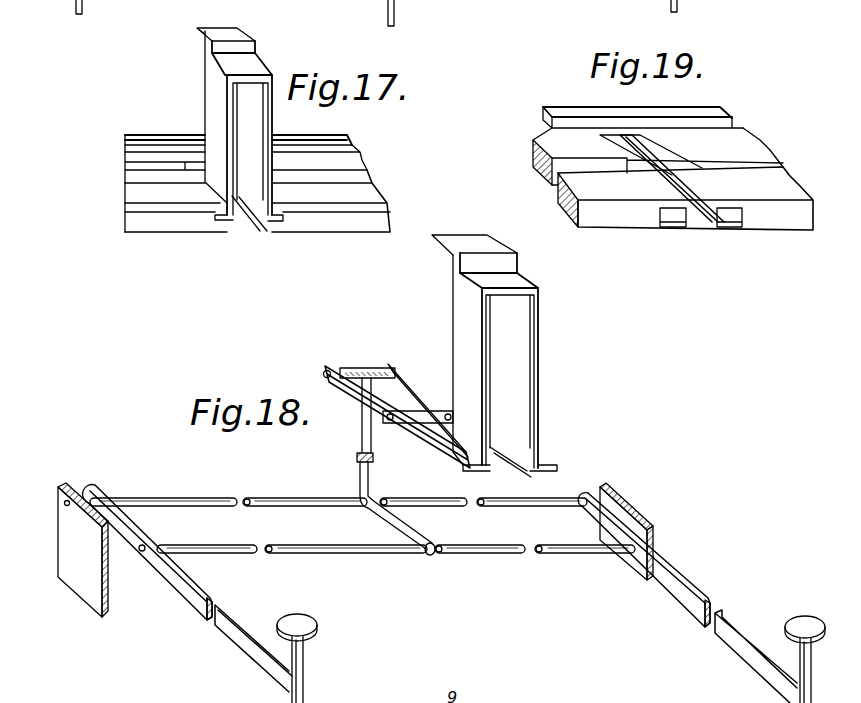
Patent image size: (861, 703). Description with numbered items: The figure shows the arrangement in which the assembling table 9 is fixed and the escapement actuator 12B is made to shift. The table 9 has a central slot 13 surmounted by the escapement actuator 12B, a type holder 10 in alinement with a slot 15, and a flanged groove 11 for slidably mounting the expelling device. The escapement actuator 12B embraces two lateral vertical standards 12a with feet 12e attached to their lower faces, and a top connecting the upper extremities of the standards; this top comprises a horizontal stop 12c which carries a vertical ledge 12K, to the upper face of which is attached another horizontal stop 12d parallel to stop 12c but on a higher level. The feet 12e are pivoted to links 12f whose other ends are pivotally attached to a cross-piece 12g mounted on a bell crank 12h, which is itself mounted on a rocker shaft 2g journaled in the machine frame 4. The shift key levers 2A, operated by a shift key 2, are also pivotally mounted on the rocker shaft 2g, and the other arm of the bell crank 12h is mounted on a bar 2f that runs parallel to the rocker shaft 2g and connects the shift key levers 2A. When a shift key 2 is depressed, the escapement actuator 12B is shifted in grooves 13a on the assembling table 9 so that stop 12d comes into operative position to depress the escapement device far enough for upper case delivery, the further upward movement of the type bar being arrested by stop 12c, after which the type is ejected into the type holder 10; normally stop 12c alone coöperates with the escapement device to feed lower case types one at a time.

In FIG. 18, the shift key 2 is at (303, 626).
In FIG. 18, the shift key lever 2A is at (209, 615).
In FIG. 18, the bar 2f is at (323, 553).
In FIG. 18, the rocker shaft 2g is at (274, 501).
In FIG. 18, the machine frame 4 is at (83, 588).
In FIG. 17, the assembling table 9 is at (299, 140).
In FIG. 19, the assembling table 9 is at (576, 108).
In FIG. 17, the type holder 10 is at (357, 178).
In FIG. 19, the type holder 10 is at (753, 164).
In FIG. 17, the flanged groove 11 is at (344, 148).
In FIG. 19, the flanged groove 11 is at (690, 122).
In FIG. 17, the lateral standards 12a is at (232, 123).
In FIG. 18, the lateral standards 12a is at (536, 348).
In FIG. 17, the escapement actuator 12B is at (205, 88).
In FIG. 18, the escapement actuator 12B is at (455, 327).
In FIG. 17, the horizontal stop 12c is at (256, 62).
In FIG. 18, the horizontal stop 12c is at (521, 282).
In FIG. 17, the horizontal stop 12d is at (232, 27).
In FIG. 18, the horizontal stop 12d is at (483, 238).
In FIG. 17, the feet 12e is at (222, 218).
In FIG. 18, the feet 12e is at (426, 442).
In FIG. 18, the links 12f is at (407, 377).
In FIG. 18, the cross-piece 12g is at (358, 365).
In FIG. 18, the bell crank 12h is at (359, 467).
In FIG. 17, the vertical ledge 12K is at (212, 47).
In FIG. 18, the vertical ledge 12K is at (503, 265).
In FIG. 17, the central slot 13 is at (245, 233).
In FIG. 19, the central slot 13 is at (690, 219).
In FIG. 18, the central slot 13 is at (498, 462).
In FIG. 19, the grooves 13a is at (693, 221).
In FIG. 17, the slot 15 is at (140, 177).
In FIG. 19, the slot 15 is at (568, 165).